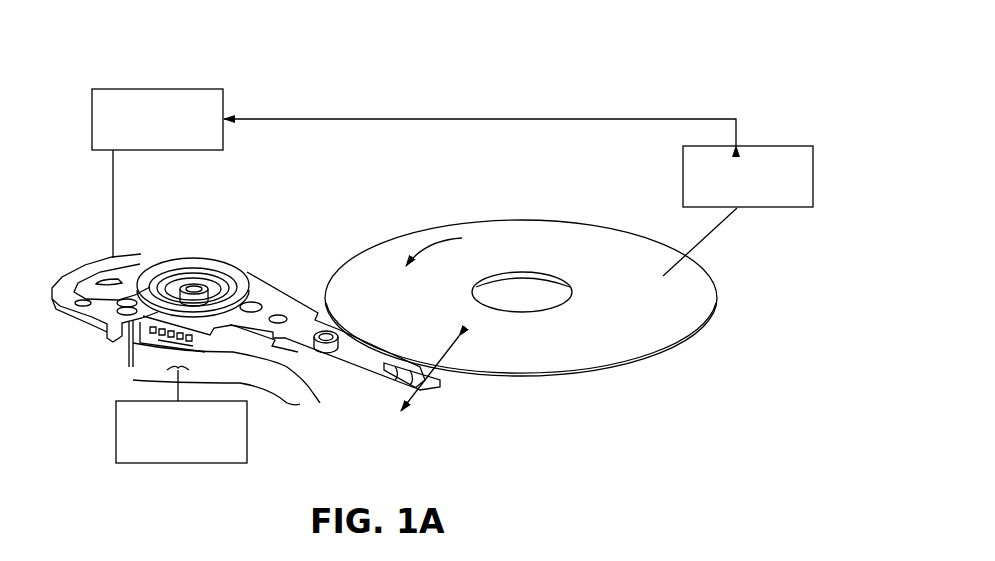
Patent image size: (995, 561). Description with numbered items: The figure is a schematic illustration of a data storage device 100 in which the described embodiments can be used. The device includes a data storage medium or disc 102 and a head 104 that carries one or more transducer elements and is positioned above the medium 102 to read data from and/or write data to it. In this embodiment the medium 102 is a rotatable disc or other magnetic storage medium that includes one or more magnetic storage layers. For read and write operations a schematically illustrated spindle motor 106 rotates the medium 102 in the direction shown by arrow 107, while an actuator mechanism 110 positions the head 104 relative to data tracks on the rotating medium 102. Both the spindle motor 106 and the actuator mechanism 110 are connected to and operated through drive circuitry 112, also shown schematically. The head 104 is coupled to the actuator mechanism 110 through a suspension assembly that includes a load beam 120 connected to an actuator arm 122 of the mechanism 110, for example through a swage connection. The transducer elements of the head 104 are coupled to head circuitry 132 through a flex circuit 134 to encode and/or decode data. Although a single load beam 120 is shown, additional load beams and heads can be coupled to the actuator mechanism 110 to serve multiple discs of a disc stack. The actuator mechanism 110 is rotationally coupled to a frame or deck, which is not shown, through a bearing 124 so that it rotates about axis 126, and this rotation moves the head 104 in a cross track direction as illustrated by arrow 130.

The data storage device 100 is at (645, 88).
The data storage medium 102 is at (609, 255).
The head 104 is at (437, 383).
The spindle motor 106 is at (782, 145).
The arrow 107 is at (432, 246).
The actuator mechanism 110 is at (212, 252).
The drive circuitry 112 is at (196, 88).
The load beam 120 is at (347, 351).
The actuator arm 122 is at (279, 294).
The bearing 124 is at (190, 289).
The axis 126 is at (194, 290).
The arrow 130 is at (442, 362).
The head circuitry 132 is at (116, 431).
The flex circuit 134 is at (233, 375).